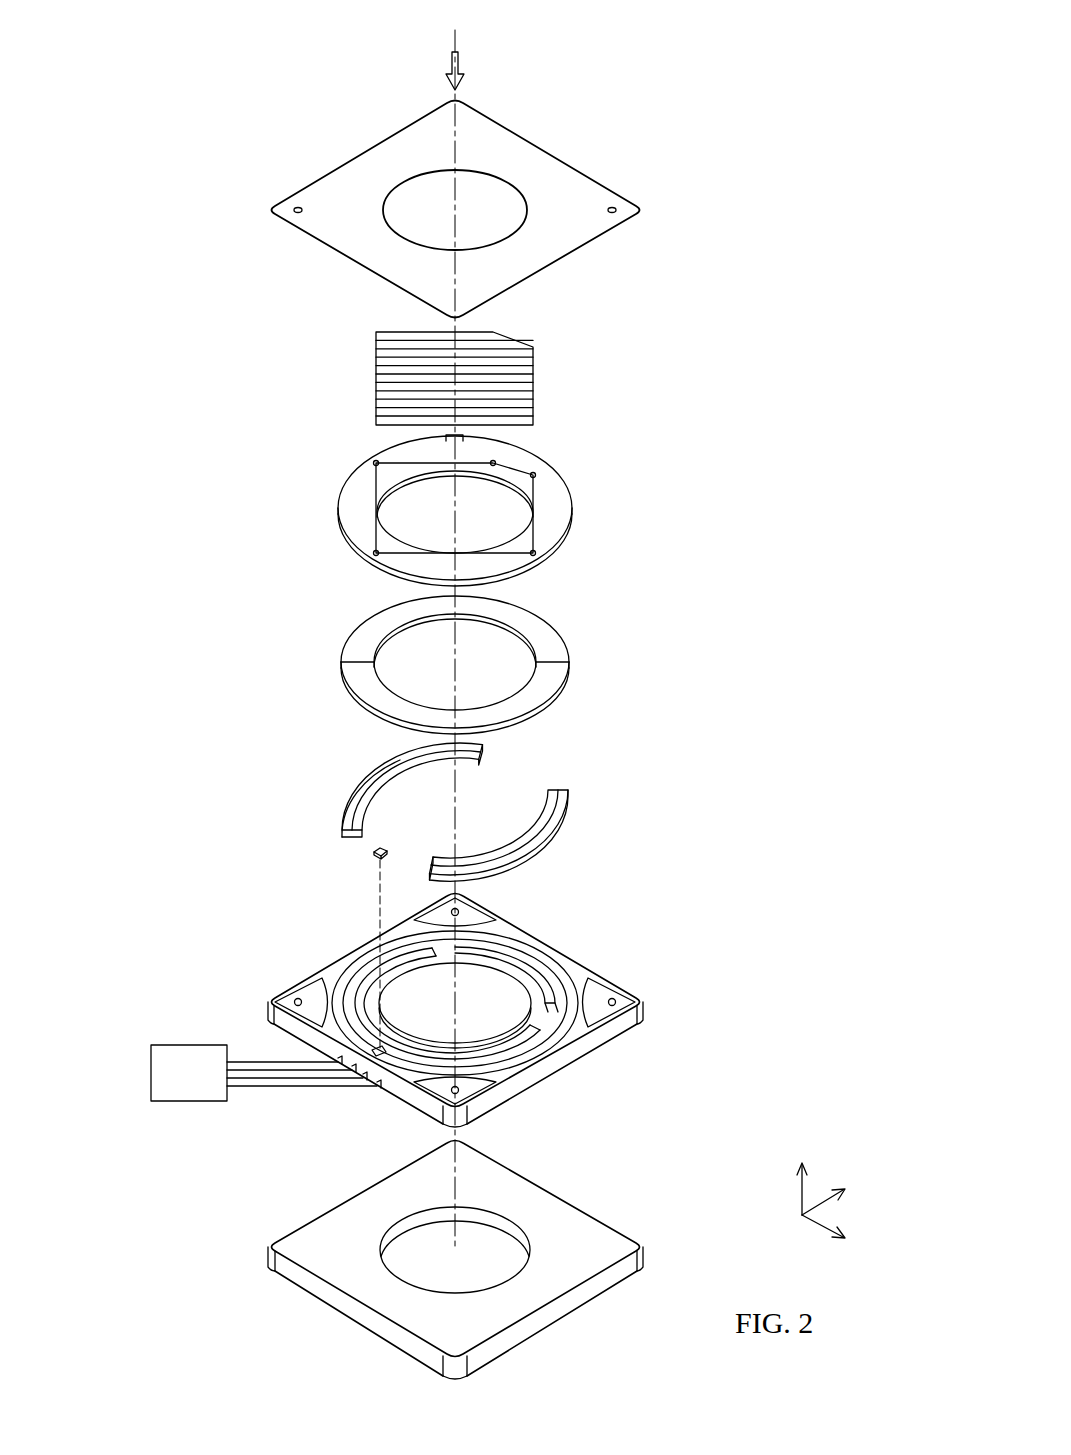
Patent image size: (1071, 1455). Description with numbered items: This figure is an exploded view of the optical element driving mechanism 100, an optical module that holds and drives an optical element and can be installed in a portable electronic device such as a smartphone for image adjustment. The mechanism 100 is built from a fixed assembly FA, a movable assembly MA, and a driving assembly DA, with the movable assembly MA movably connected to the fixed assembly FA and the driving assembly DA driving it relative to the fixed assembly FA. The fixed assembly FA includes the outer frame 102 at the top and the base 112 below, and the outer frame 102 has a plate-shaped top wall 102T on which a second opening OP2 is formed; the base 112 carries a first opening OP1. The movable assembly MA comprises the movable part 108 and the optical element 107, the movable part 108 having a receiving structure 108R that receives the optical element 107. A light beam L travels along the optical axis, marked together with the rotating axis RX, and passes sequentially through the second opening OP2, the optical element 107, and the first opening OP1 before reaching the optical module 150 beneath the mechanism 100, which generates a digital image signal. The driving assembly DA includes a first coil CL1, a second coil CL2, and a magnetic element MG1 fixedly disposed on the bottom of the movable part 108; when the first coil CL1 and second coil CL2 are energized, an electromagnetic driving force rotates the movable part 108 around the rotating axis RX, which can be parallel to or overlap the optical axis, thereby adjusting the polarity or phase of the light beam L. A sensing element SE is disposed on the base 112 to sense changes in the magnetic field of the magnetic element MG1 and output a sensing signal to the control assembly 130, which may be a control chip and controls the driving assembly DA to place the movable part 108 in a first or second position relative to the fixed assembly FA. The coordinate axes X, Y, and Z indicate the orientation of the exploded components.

The optical element driving mechanism 100 is at (130, 59).
The outer frame 102 is at (490, 199).
The top wall 102T is at (570, 190).
The second opening OP2 is at (515, 187).
The optical element 107 is at (535, 390).
The movable part 108 is at (464, 510).
The receiving structure 108R is at (383, 468).
The magnetic element MG1 is at (569, 652).
The first coil CL1 is at (569, 813).
The second coil CL2 is at (340, 804).
The sensing element SE is at (374, 852).
The base 112 is at (486, 1006).
The first opening OP1 is at (527, 980).
The control assembly 130 is at (212, 1088).
The optical module 150 is at (620, 1231).
The fixed assembly FA is at (125, 135).
The driving assembly DA is at (125, 220).
The movable assembly MA is at (125, 335).
The rotating axis RX is at (480, 625).
The light beam L is at (468, 72).
The X axis X is at (837, 1237).
The Y axis Y is at (837, 1194).
The Z axis Z is at (802, 1171).